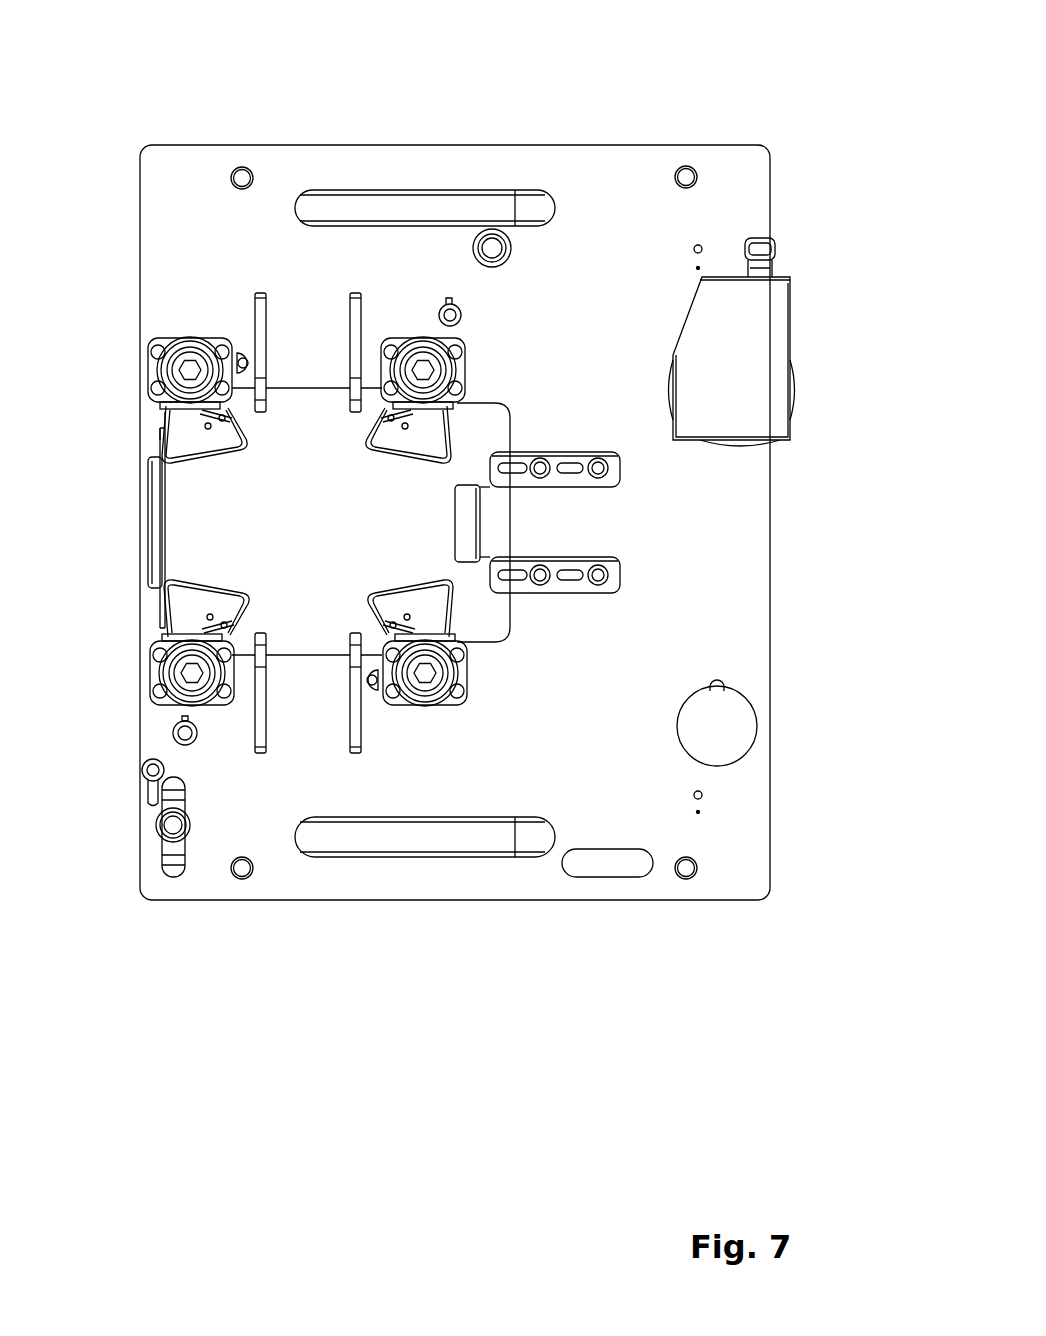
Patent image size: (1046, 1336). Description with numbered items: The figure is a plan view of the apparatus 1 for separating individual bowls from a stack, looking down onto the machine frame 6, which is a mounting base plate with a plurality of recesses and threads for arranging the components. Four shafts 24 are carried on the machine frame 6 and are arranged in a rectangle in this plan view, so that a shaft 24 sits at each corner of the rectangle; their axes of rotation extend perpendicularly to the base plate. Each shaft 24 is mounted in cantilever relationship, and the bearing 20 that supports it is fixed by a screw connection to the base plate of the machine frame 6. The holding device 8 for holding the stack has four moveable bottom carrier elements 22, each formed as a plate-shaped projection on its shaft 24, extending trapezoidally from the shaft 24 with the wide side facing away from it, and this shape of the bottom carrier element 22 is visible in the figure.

The apparatus 1 is at (633, 110).
The machine frame 6 is at (678, 595).
The holding device 8 is at (125, 695).
The bearing 20 is at (235, 327).
The bottom carrier element 22 is at (220, 430).
The shaft 24 is at (193, 368).